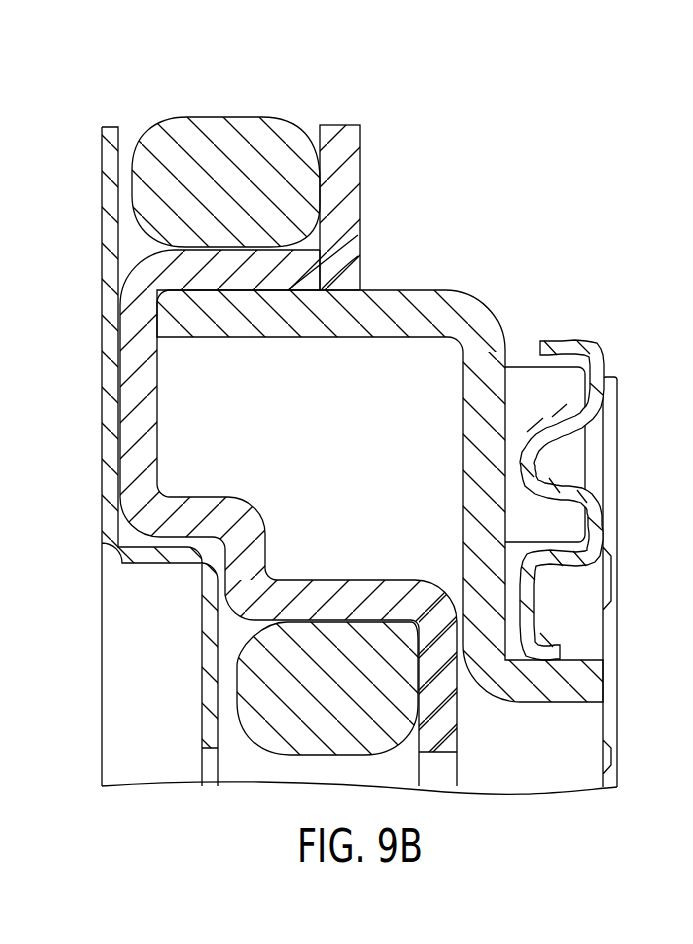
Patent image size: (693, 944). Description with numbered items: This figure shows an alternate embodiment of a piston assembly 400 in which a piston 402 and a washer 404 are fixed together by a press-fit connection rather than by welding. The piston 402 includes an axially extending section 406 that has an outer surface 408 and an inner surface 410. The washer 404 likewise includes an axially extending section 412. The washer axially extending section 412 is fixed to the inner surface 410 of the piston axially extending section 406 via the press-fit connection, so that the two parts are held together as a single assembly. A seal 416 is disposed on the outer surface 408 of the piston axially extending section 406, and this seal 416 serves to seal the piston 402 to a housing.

The piston assembly 400 is at (478, 112).
The piston 402 is at (360, 160).
The washer 404 is at (380, 474).
The axially extending section 406 is at (360, 236).
The outer surface 408 is at (258, 466).
The inner surface 410 is at (274, 294).
The axially extending section 412 is at (382, 313).
The seal 416 is at (247, 116).